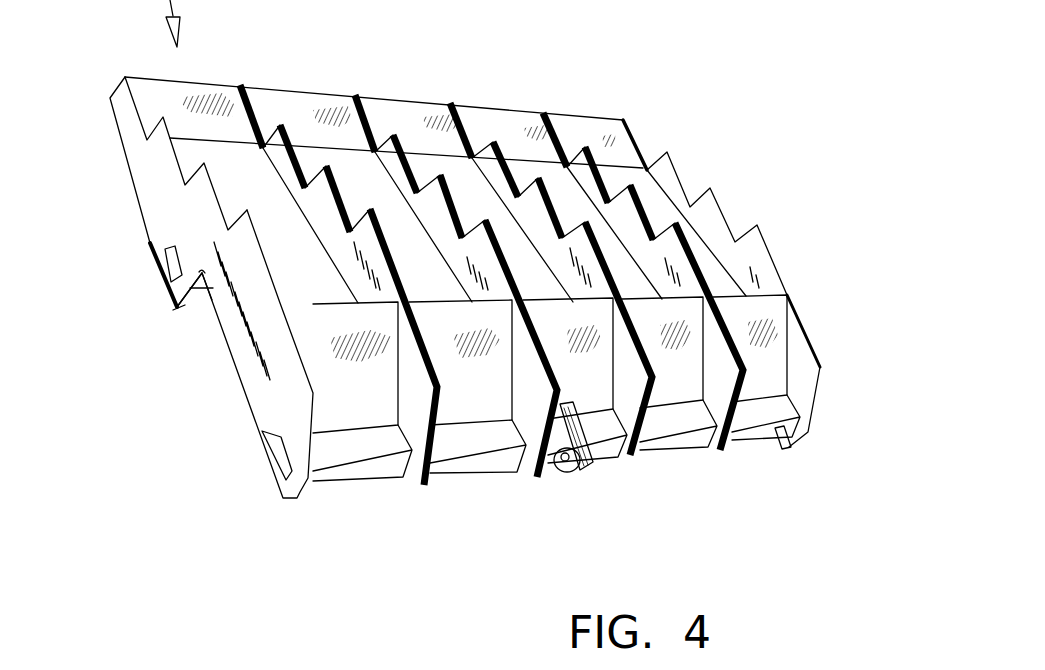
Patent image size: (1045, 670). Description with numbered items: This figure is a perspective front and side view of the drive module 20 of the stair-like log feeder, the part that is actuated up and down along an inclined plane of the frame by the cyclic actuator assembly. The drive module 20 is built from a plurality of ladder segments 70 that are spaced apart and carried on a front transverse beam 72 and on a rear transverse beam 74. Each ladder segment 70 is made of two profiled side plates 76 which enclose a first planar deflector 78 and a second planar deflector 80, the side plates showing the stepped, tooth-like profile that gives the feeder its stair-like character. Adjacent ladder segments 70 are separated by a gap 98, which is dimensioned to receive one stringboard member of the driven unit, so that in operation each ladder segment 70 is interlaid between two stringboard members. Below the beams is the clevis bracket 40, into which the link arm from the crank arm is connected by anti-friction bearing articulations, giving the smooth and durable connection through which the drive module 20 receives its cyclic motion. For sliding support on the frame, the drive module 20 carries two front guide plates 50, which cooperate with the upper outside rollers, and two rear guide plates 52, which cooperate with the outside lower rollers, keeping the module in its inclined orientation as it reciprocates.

The drive module 20 is at (836, 134).
The clevis bracket 40 is at (590, 467).
The front guide plate 50 is at (172, 301).
The rear guide plate 52 is at (273, 474).
The ladder segment 70 is at (381, 527).
The front transverse beam 72 is at (205, 275).
The rear transverse beam 74 is at (463, 462).
The profiled side plate 76 is at (272, 148).
The first planar deflector 78 is at (502, 126).
The second planar deflector 80 is at (320, 357).
The gap 98 is at (355, 90).